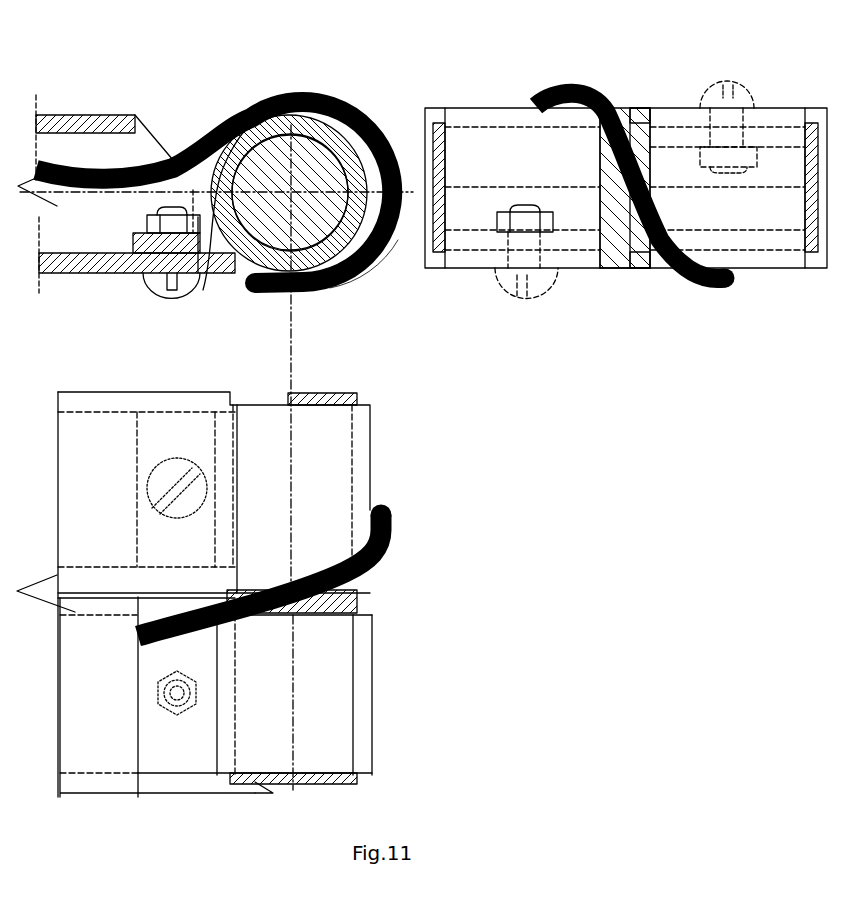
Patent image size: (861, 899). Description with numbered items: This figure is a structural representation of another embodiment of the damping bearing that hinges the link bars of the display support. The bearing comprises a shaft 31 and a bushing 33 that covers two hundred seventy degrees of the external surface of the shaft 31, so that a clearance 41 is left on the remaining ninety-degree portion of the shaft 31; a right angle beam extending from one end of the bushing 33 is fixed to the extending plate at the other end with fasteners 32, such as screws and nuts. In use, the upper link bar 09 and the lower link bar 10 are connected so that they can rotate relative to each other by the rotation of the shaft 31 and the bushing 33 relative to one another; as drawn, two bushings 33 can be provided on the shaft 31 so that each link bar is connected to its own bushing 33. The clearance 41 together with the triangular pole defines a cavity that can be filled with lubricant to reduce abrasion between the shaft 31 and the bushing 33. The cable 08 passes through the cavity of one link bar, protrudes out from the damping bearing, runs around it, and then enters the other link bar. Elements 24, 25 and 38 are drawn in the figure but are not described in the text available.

The cable 08 is at (347, 290).
The upper link bar 09 is at (587, 275).
The lower link bar 10 is at (658, 270).
The resilient sleeve 24 is at (233, 258).
The bolt 25 is at (203, 287).
The shaft 31 is at (390, 262).
The fasteners 32 is at (540, 288).
The bushing 33 is at (373, 667).
The plate 38 is at (373, 777).
The clearance 41 is at (265, 185).